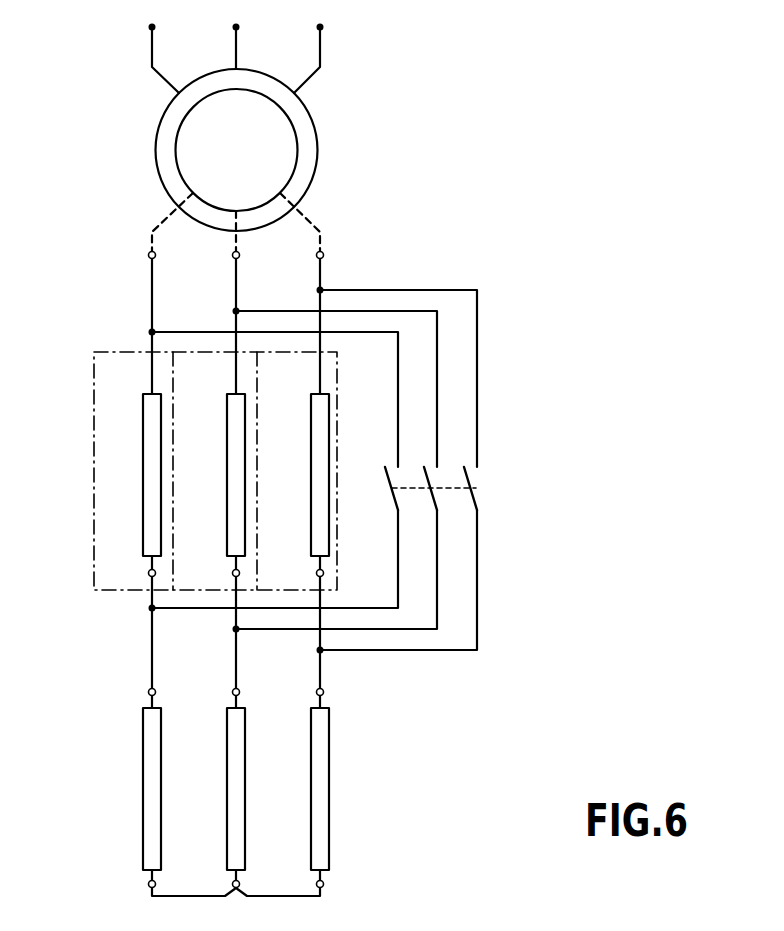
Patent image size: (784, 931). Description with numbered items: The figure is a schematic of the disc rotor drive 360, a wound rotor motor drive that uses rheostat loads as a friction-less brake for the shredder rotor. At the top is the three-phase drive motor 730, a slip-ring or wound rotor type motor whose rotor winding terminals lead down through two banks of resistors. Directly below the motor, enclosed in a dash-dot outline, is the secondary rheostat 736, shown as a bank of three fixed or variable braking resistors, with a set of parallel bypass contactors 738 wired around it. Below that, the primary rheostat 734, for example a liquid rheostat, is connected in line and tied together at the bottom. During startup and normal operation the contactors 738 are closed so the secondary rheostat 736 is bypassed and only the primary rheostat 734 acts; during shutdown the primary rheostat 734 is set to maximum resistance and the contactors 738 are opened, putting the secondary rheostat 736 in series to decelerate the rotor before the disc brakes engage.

The rotor drive 360 is at (641, 166).
The drive motor 730 is at (315, 123).
The primary rheostat 734 is at (143, 787).
The secondary rheostat 736 is at (88, 456).
The bypass contactor 738 is at (498, 482).